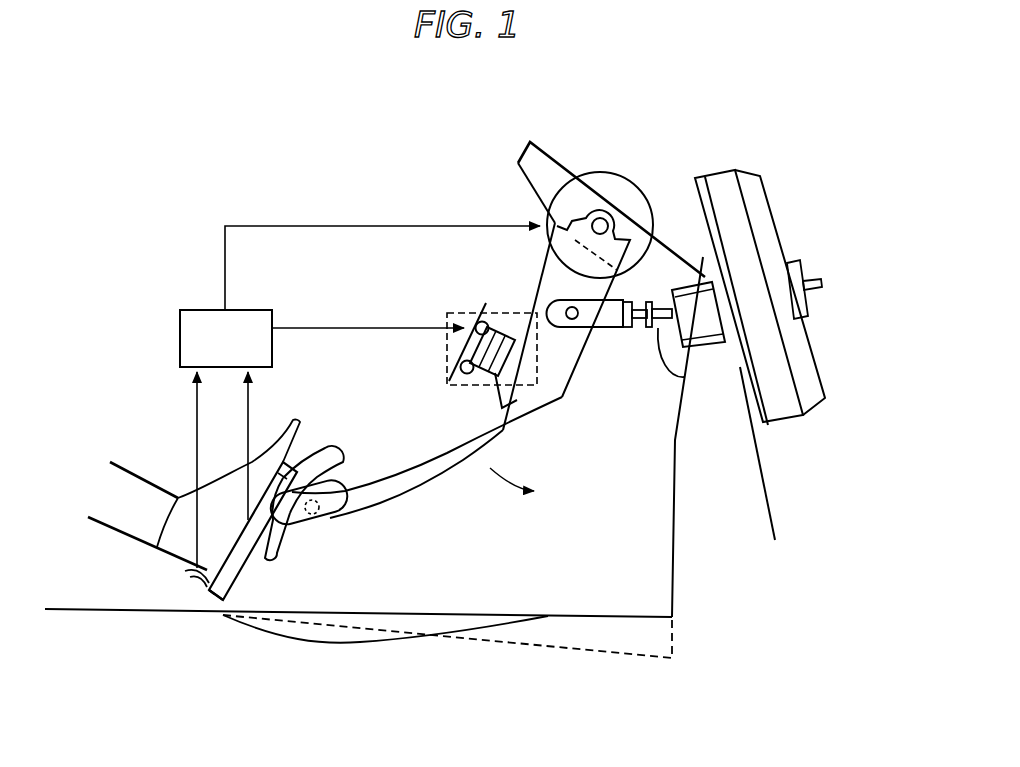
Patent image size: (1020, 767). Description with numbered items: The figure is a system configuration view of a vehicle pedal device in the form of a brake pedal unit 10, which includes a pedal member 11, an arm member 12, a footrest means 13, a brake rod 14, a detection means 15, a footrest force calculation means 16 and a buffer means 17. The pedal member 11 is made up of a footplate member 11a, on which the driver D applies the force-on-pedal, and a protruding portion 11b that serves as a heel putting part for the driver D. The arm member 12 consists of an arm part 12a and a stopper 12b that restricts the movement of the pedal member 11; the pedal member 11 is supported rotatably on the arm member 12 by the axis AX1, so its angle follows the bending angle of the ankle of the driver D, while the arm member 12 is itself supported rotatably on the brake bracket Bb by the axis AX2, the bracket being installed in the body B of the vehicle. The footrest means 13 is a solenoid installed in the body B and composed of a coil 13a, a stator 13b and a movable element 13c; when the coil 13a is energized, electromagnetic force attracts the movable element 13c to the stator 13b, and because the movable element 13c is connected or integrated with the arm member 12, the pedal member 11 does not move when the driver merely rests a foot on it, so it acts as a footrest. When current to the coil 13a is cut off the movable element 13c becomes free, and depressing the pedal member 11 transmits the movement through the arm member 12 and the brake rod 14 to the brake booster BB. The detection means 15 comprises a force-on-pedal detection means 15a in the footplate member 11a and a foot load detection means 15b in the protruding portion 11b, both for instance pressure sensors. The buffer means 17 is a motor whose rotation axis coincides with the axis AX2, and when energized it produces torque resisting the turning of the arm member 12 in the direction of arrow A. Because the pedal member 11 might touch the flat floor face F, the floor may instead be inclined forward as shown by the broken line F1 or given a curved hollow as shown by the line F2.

The brake pedal unit 10 is at (270, 169).
The pedal member 11 is at (254, 572).
The footplate member 11a is at (333, 452).
The protruding portion 11b is at (193, 597).
The arm member 12 is at (432, 494).
The arm part 12a is at (450, 462).
The stopper 12b is at (292, 538).
The footrest means 13 is at (447, 355).
The coil 13a is at (488, 322).
The stator 13b is at (466, 374).
The movable element 13c is at (502, 408).
The brake rod 14 is at (613, 330).
The detection means 15 is at (180, 570).
The force-on-pedal detection means 15a is at (242, 600).
The foot load detection means 15b is at (183, 582).
The footrest force calculation means 16 is at (180, 340).
The buffer means 17 is at (548, 200).
The arrow A is at (522, 486).
The axis AX1 is at (324, 514).
The axis AX2 is at (604, 219).
The body B is at (676, 490).
The brake bracket Bb is at (556, 160).
The brake booster BB is at (722, 183).
The driver D is at (137, 466).
The floor face F is at (513, 609).
The inclined floor face F1 is at (527, 646).
The curved floor face F2 is at (412, 640).